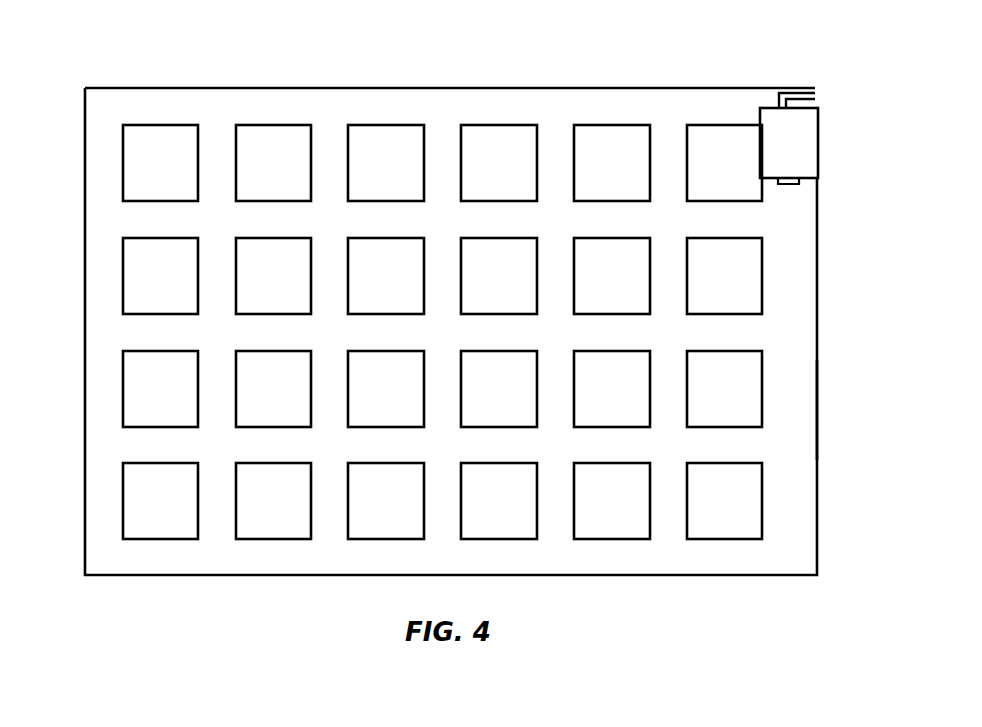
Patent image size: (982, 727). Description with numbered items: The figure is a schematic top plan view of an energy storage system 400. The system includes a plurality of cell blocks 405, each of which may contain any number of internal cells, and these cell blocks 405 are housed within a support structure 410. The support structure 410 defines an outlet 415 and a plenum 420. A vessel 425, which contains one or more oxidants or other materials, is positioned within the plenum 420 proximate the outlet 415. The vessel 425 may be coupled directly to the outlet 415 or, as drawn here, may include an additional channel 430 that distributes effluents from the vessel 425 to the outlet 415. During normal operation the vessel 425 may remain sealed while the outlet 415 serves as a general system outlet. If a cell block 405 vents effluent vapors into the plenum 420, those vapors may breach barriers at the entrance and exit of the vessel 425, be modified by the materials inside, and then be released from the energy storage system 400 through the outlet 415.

The energy storage system 400 is at (85, 65).
The cell blocks 405 is at (272, 125).
The support structure 410 is at (817, 264).
The outlet 415 is at (817, 102).
The plenum 420 is at (795, 393).
The vessel 425 is at (818, 160).
The channel 430 is at (797, 92).